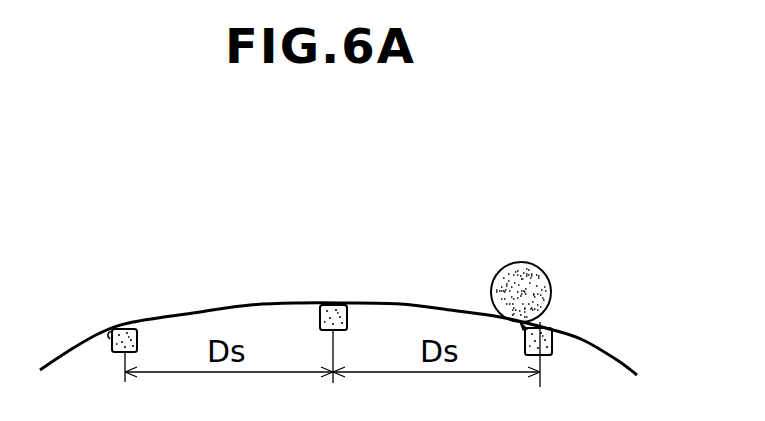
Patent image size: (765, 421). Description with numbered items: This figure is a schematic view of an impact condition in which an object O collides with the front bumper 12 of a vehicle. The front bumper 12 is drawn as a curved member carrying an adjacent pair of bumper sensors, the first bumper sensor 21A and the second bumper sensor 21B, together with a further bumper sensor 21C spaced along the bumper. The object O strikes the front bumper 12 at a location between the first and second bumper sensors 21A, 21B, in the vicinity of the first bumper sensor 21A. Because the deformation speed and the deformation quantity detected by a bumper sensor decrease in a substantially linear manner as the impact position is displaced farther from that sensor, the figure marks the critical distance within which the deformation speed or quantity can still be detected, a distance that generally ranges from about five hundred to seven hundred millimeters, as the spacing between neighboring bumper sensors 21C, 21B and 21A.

The front bumper 12 is at (232, 307).
The first bumper sensor 21A is at (552, 346).
The second bumper sensor 21B is at (348, 311).
The bumper sensor 21C is at (112, 336).
The object O is at (521, 262).